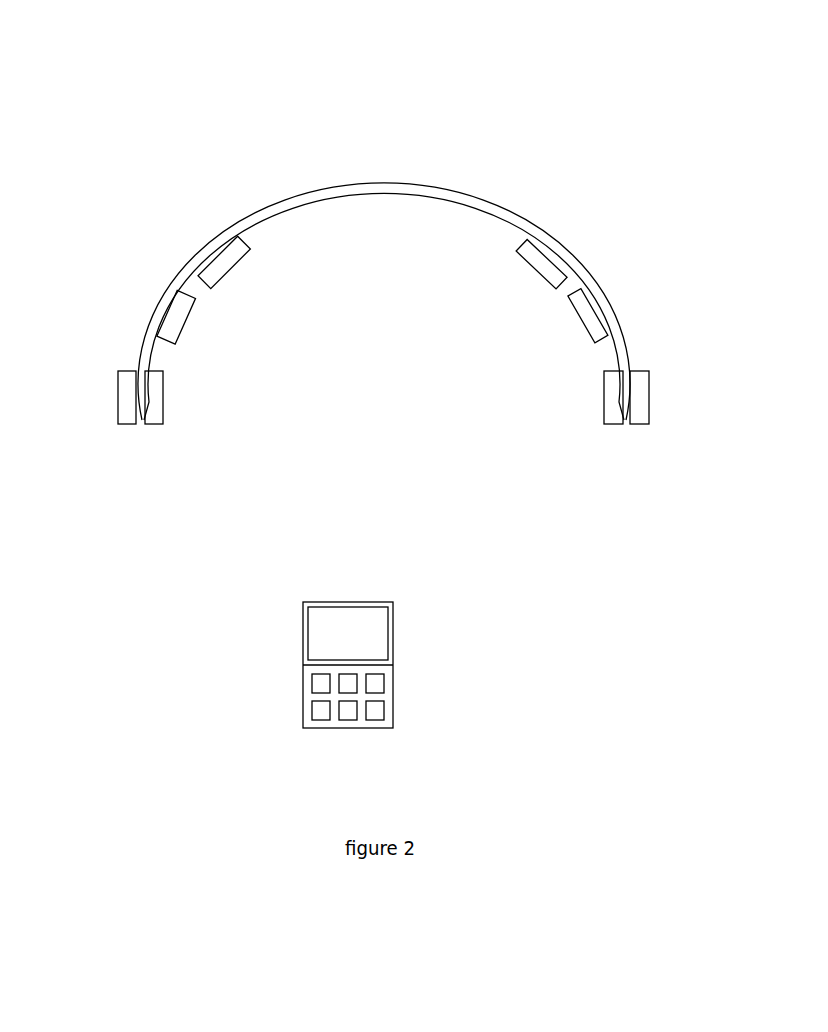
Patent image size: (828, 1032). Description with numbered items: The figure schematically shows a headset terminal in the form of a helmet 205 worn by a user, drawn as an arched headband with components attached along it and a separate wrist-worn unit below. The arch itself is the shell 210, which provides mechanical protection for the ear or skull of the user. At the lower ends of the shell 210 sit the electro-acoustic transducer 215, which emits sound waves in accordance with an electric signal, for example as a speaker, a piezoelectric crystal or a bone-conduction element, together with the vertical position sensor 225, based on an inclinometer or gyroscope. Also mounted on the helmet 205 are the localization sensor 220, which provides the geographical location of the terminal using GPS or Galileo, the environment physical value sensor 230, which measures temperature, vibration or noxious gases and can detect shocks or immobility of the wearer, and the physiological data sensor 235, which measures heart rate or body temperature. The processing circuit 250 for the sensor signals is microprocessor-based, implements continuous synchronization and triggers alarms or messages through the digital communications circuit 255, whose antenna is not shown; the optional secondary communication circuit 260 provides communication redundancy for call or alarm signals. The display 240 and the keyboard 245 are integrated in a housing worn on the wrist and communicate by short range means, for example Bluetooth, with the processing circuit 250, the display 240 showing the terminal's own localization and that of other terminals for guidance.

The helmet 205 is at (338, 113).
The shell 210 is at (276, 212).
The electro-acoustic transducer 215 is at (152, 415).
The localization sensor 220 is at (222, 263).
The vertical position sensor 225 is at (610, 415).
The environment physical value sensor 230 is at (640, 383).
The physiological data sensor 235 is at (542, 258).
The display 240 is at (330, 615).
The keyboard 245 is at (340, 710).
The processing circuit 250 is at (177, 317).
The digital communications circuit 255 is at (593, 322).
The secondary communication circuit 260 is at (128, 382).